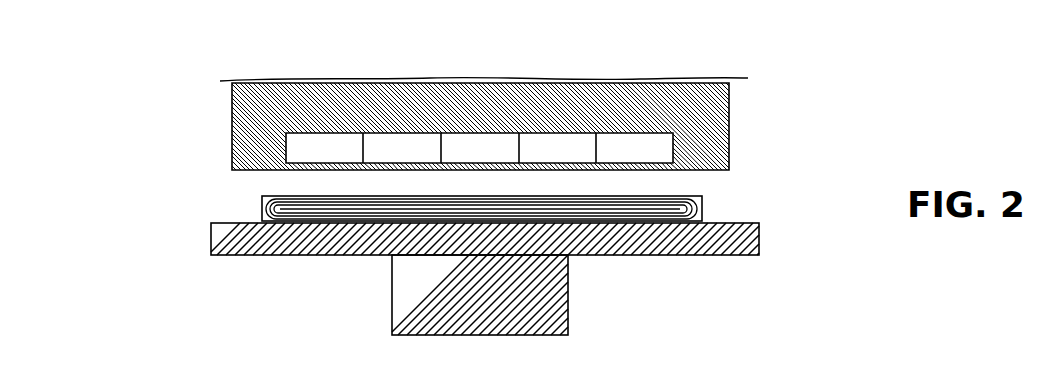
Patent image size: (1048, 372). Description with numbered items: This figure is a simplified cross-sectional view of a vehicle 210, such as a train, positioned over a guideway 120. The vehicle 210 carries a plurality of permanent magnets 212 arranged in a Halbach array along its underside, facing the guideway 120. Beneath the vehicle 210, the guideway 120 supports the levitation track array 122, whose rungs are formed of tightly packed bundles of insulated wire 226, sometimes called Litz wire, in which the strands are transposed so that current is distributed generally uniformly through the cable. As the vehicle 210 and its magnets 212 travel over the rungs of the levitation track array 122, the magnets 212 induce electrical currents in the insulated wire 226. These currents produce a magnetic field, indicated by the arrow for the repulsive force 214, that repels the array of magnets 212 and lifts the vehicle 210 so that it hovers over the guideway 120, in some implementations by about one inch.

The guideway 120 is at (362, 294).
The levitation track array 122 is at (702, 197).
The vehicle 210 is at (699, 92).
The permanent magnets 212 is at (543, 138).
The repulsive force 214 is at (212, 166).
The insulated wire 226 is at (690, 210).